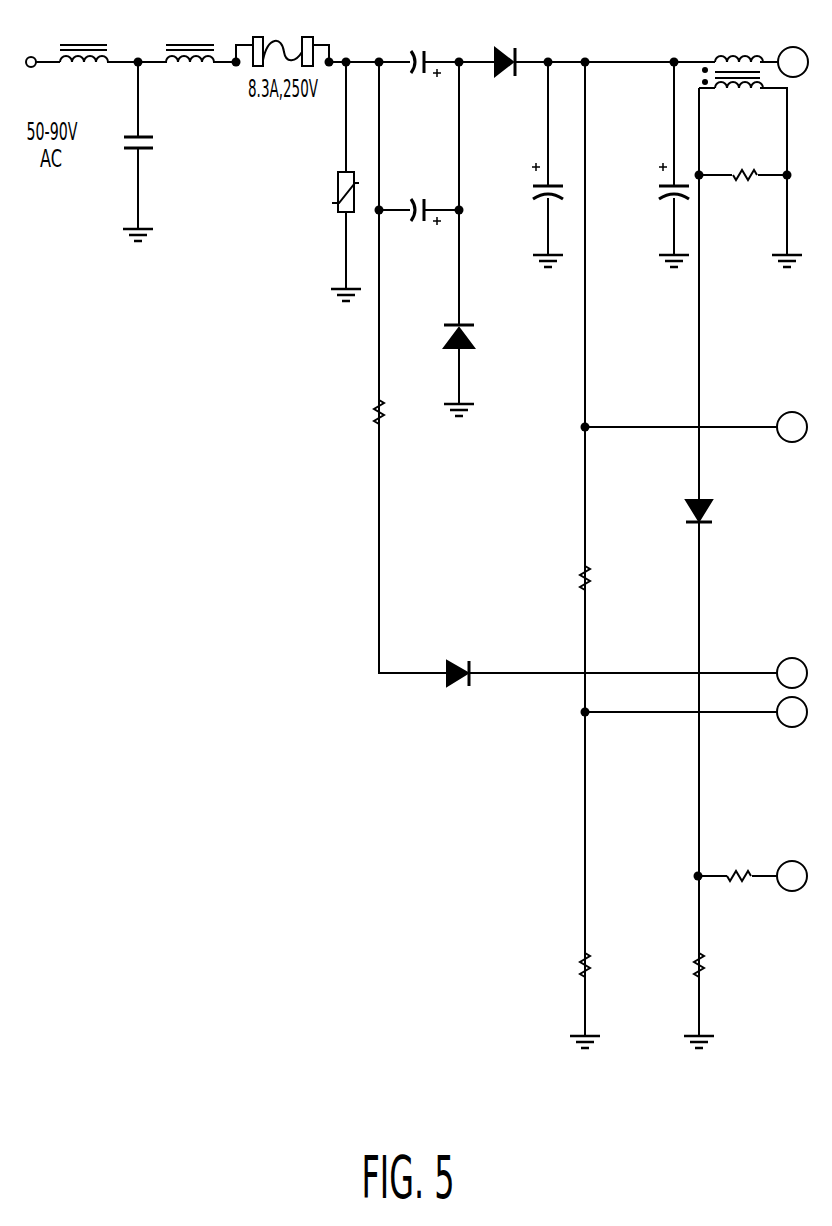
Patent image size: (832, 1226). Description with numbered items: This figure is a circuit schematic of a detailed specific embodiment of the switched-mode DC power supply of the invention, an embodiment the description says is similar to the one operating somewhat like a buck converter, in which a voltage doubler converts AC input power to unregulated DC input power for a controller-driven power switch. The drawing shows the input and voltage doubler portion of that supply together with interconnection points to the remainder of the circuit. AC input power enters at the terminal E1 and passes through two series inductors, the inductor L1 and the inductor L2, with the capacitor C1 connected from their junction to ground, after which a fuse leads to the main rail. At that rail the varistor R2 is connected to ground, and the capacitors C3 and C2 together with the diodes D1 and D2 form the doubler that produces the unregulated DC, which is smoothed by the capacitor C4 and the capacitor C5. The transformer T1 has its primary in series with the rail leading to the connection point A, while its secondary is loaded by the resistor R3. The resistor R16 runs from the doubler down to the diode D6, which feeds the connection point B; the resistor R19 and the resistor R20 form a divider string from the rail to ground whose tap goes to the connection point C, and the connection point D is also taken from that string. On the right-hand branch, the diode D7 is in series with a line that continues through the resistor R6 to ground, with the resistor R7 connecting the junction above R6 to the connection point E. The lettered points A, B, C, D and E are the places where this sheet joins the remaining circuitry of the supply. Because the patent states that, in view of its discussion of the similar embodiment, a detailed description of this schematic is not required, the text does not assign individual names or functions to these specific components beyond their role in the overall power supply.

The AC input terminal E1 is at (30, 47).
The input filter inductor L1 is at (82, 56).
The input filter inductor L2 is at (188, 56).
The input filter capacitor C1 is at (158, 142).
The doubler capacitor C2 is at (419, 227).
The doubler capacitor C3 is at (419, 74).
The filter capacitor C4 is at (523, 190).
The filter capacitor C5 is at (648, 190).
The rectifier diode D1 is at (504, 62).
The rectifier diode D2 is at (487, 332).
The diode D6 is at (459, 674).
The diode D7 is at (668, 513).
The varistor R2 is at (324, 192).
The resistor R3 is at (743, 176).
The resistor R6 is at (686, 963).
The resistor R7 is at (739, 879).
The resistor R16 is at (357, 416).
The resistor R19 is at (561, 583).
The resistor R20 is at (567, 963).
The transformer T1 is at (738, 75).
The node A terminal A is at (793, 62).
The node B terminal B is at (792, 427).
The node C terminal C is at (792, 673).
The node D terminal D is at (792, 712).
The node E terminal E is at (792, 876).